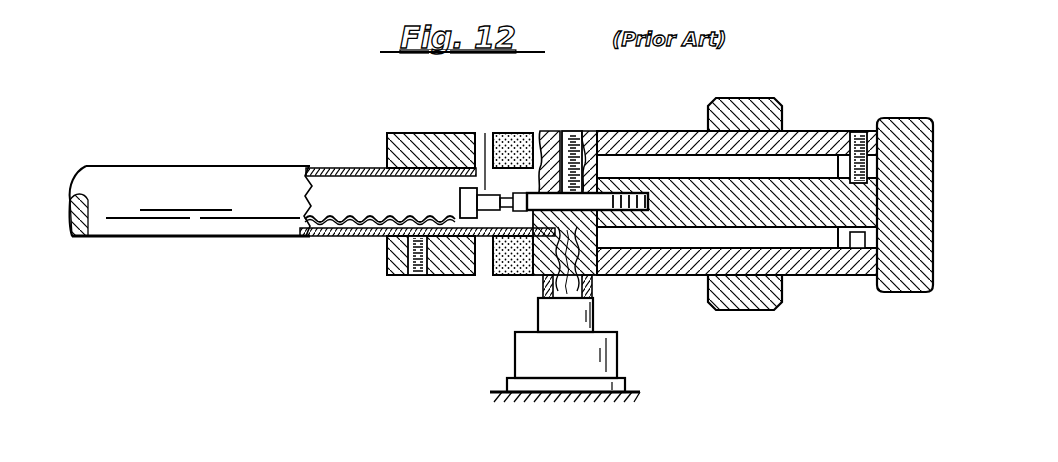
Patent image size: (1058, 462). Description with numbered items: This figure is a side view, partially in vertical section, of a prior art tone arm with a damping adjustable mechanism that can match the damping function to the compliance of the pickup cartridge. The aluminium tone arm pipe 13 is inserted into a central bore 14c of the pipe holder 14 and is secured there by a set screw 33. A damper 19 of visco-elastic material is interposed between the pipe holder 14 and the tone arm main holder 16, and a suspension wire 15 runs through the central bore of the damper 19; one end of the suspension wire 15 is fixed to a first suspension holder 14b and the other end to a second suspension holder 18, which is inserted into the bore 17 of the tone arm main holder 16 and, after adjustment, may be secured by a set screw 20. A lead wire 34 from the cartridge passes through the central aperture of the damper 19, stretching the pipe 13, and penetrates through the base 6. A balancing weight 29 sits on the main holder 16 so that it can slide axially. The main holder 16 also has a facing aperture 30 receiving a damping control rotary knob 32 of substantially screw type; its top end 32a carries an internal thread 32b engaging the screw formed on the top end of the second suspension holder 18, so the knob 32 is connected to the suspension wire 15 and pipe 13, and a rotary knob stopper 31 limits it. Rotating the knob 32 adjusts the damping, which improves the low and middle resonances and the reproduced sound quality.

The base 6 is at (612, 360).
The pipe 13 is at (147, 178).
The pipe holder 14 is at (425, 136).
The first suspension holder 14b is at (496, 134).
The bore 14c is at (387, 152).
The suspension wire 15 is at (546, 134).
The tone arm main holder 16 is at (690, 132).
The bore 17 is at (640, 133).
The second suspension holder 18 is at (563, 112).
The damper 19 is at (507, 278).
The set screw 20 is at (587, 154).
The balancing weight 29 is at (758, 96).
The facing aperture 30 is at (798, 160).
The rotary knob stopper 31 is at (858, 133).
The damping control rotary knob 32 is at (908, 116).
The top end 32a is at (690, 278).
The internal thread 32b is at (634, 278).
The set screw 33 is at (418, 278).
The lead wire 34 is at (338, 236).